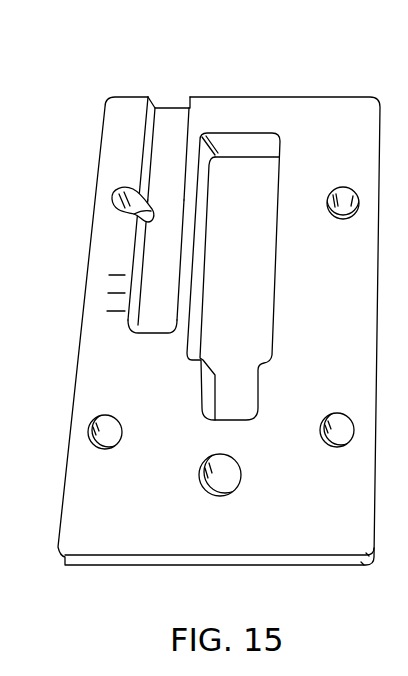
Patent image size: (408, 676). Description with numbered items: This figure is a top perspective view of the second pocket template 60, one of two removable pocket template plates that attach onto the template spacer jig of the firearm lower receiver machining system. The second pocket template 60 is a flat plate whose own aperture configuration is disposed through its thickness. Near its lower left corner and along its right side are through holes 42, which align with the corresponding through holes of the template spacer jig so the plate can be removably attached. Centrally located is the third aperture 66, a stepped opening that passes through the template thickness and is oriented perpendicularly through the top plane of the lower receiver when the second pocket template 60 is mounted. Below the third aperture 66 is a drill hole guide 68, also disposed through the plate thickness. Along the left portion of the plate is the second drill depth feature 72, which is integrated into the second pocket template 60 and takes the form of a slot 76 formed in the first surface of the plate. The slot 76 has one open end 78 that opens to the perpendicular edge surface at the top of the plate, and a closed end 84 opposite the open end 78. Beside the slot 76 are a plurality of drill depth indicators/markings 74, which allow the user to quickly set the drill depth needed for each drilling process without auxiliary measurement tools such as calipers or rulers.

The second pocket template 60 is at (298, 107).
The open end 78 is at (165, 100).
The second drill depth feature 72 is at (168, 122).
The slot 76 is at (150, 253).
The closed end 84 is at (153, 332).
The drill depth indicators/markings 74 is at (100, 310).
The third aperture 66 is at (238, 218).
The through holes 42 is at (93, 432).
The drill hole guide 68 is at (228, 482).